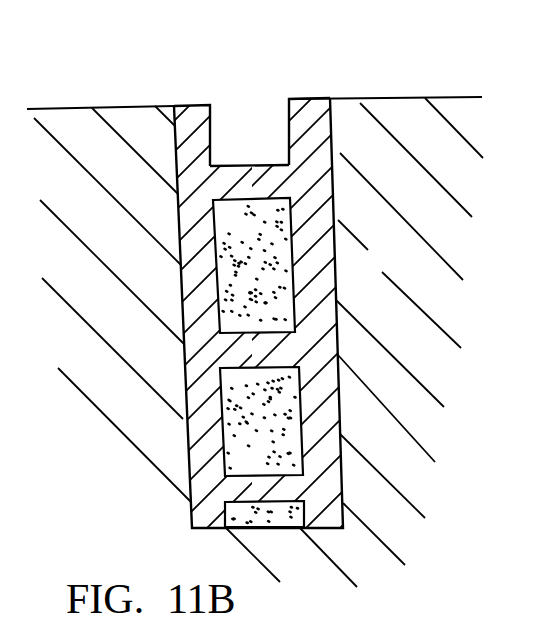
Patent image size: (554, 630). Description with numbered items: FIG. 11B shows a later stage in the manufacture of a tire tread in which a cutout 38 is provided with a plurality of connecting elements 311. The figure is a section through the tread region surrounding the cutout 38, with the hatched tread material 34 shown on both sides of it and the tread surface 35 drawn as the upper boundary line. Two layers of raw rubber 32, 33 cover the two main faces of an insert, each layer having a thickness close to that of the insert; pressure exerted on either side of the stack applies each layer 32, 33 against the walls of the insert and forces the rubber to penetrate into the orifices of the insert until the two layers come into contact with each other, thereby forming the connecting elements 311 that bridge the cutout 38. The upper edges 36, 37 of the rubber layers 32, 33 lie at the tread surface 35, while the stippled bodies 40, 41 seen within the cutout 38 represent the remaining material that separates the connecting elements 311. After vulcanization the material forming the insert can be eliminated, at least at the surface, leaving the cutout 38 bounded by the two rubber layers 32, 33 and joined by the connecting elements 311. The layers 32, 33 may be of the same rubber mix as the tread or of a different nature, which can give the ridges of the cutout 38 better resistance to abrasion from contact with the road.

The layer of raw rubber 32 is at (317, 272).
The layer of raw rubber 33 is at (194, 280).
The surrounding ground 34 is at (103, 455).
The ground surface 35 is at (140, 107).
The liner upper edge 36 is at (209, 104).
The liner upper edge 37 is at (288, 100).
The cutout 38 is at (247, 100).
The upper insert block 40 is at (210, 305).
The lower insert block 41 is at (297, 298).
The connecting elements 311 is at (283, 490).